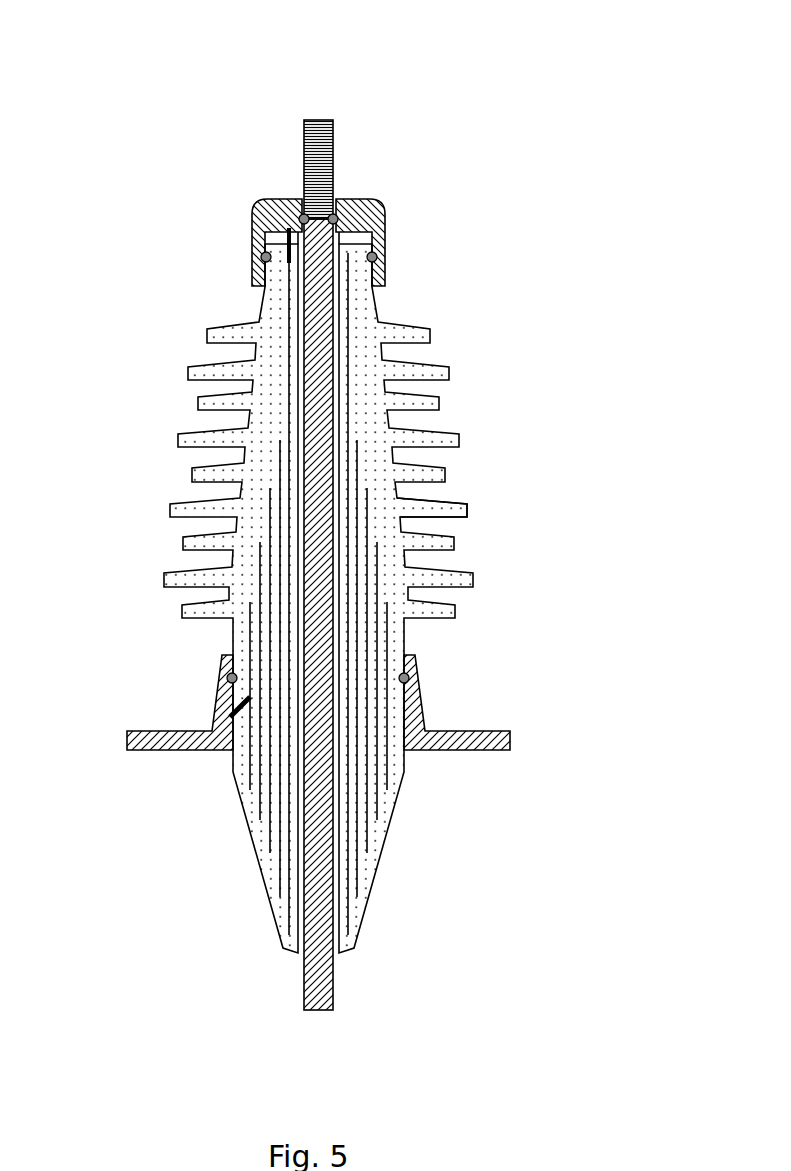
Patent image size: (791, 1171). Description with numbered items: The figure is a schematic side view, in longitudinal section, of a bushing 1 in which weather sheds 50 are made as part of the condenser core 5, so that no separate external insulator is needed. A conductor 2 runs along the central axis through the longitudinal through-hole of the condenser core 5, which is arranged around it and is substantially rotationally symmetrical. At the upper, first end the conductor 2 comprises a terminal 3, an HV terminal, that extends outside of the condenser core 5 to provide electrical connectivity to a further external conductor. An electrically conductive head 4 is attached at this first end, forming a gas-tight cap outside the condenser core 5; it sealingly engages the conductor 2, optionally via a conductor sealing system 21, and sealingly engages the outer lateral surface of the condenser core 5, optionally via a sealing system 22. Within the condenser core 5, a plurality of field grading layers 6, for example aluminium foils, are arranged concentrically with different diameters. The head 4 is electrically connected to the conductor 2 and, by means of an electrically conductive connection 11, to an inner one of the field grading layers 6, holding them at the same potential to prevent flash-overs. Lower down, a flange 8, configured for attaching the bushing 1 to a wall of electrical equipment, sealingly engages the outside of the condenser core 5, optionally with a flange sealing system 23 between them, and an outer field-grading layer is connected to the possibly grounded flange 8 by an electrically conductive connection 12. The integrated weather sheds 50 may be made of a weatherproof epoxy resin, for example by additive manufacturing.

The bushing 1 is at (486, 97).
The conductor 2 is at (318, 341).
The terminal 3 is at (317, 169).
The electrically conductive head 4 is at (360, 216).
The condenser core 5 is at (390, 542).
The field grading layers 6 is at (358, 450).
The flange 8 is at (425, 717).
The electrically conductive connection 11 is at (284, 247).
The electrically conductive connection 12 is at (250, 698).
The conductor sealing system 21 is at (267, 203).
The sealing system 22 is at (376, 255).
The flange sealing system 23 is at (410, 675).
The weather sheds 50 is at (450, 503).